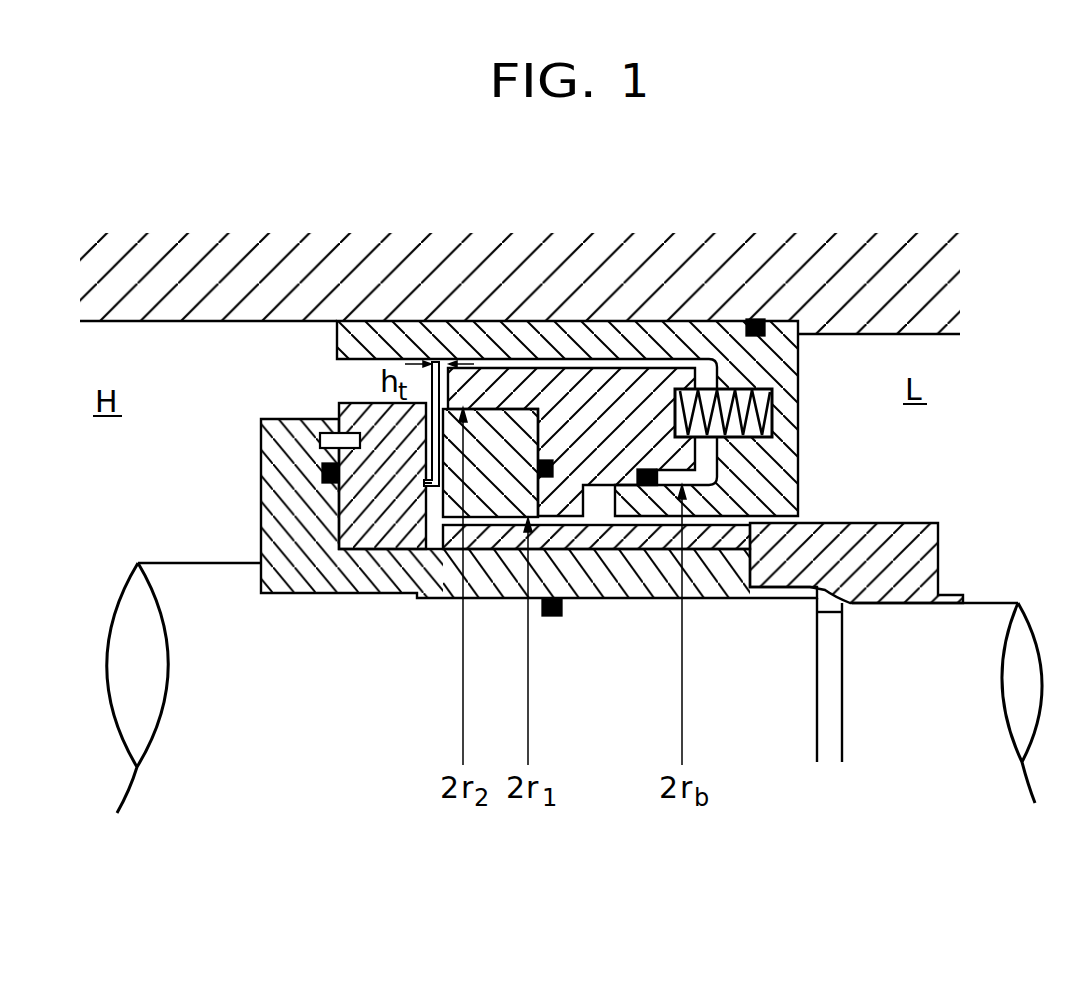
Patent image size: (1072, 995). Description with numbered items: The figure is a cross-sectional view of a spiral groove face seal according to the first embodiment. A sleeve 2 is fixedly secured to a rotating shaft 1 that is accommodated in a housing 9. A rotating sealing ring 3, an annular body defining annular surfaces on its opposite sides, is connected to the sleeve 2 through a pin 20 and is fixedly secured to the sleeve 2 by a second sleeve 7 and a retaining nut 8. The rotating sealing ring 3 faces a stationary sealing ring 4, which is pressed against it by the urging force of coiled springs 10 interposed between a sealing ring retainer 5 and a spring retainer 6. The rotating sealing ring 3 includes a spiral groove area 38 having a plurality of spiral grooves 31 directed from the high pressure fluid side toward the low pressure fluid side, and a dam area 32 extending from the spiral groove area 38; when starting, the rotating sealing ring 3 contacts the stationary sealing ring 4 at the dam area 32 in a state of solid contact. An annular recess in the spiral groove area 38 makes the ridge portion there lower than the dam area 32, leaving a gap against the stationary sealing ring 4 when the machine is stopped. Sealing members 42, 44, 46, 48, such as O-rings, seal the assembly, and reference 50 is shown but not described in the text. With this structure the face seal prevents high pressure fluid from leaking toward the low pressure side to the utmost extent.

The rotating shaft 1 is at (275, 709).
The sleeve 2 is at (272, 513).
The rotating sealing ring 3 is at (357, 410).
The stationary sealing ring 4 is at (485, 503).
The sealing ring retainer 5 is at (622, 468).
The spring retainer 6 is at (798, 432).
The sleeve 7 is at (740, 523).
The retaining nut 8 is at (925, 553).
The housing 9 is at (500, 152).
The coiled springs 10 is at (798, 388).
The pin 20 is at (320, 440).
The spiral grooves 31 is at (432, 492).
The dam area 32 is at (440, 525).
The spiral groove area 38 is at (445, 415).
The sealing member 42 is at (322, 470).
The sealing member 44 is at (547, 460).
The sealing member 46 is at (650, 468).
The sealing member 48 is at (756, 320).
The connecting portion 50 is at (427, 485).